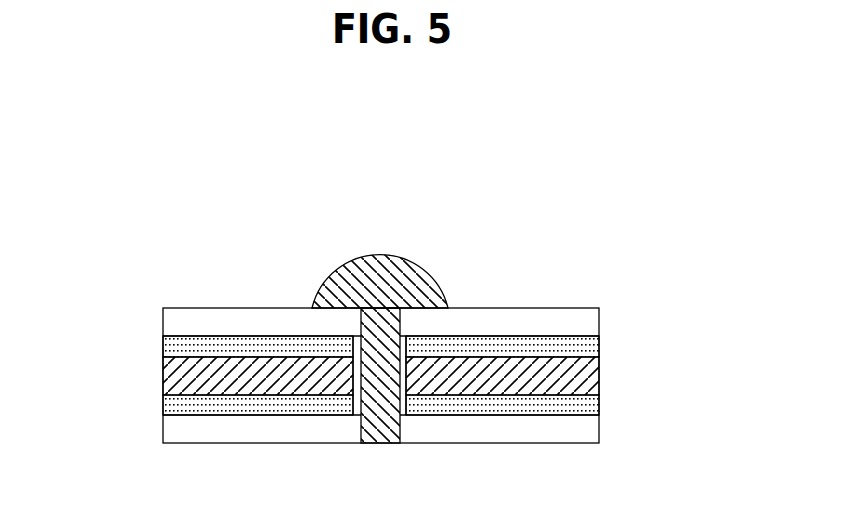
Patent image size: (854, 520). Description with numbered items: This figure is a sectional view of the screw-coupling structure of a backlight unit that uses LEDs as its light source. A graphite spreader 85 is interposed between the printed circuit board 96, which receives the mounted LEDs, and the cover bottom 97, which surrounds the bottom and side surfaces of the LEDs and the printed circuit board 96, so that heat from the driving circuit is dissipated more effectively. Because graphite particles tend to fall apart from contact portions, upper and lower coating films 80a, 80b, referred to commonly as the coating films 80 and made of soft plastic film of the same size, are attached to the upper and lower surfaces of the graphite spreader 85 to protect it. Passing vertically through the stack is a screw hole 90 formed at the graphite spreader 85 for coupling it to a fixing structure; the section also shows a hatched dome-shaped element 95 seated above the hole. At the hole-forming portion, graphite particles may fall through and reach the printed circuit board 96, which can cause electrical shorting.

The solder bump 95 is at (378, 267).
The screw hole 90 is at (403, 351).
The printed circuit board 96 is at (176, 322).
The cover bottom 97 is at (176, 425).
The graphite spreader 85 is at (176, 373).
The coating films 80 is at (697, 333).
The upper coating film 80a is at (590, 343).
The lower coating film 80b is at (590, 405).